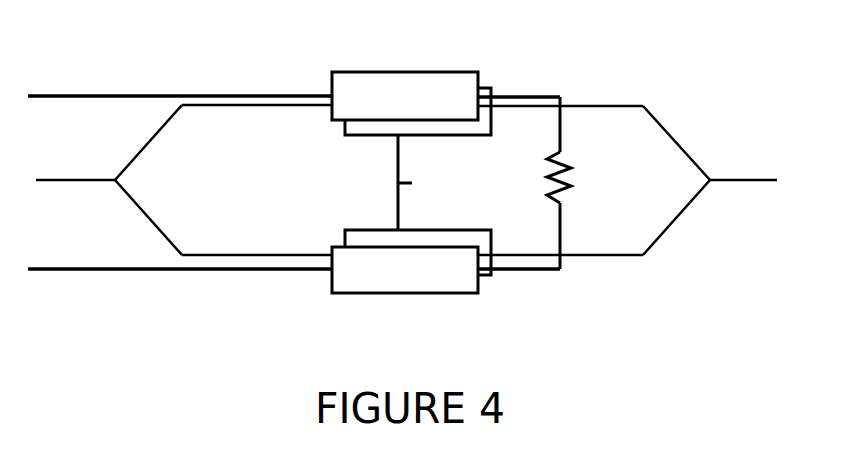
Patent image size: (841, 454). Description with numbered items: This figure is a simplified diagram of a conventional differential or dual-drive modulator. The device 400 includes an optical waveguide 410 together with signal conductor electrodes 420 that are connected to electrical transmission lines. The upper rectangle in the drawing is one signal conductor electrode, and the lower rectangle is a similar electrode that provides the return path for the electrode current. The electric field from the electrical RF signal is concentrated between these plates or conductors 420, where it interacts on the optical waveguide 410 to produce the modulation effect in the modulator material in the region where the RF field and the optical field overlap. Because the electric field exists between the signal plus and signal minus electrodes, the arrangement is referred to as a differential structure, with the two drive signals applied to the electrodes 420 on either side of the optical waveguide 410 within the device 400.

The device 400 is at (407, 181).
The optical waveguide 410 is at (612, 257).
The signal conductor electrodes 420 is at (423, 72).